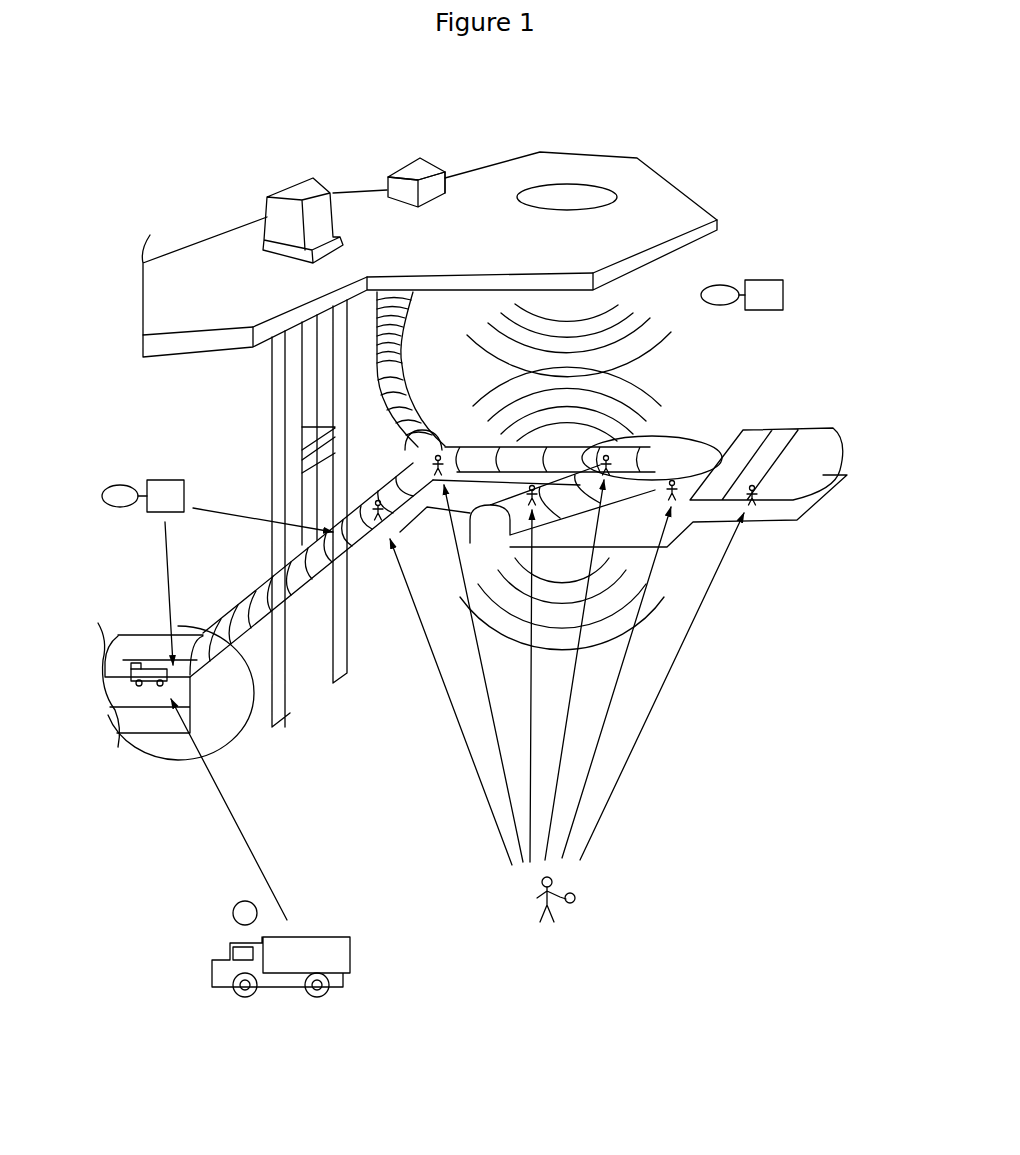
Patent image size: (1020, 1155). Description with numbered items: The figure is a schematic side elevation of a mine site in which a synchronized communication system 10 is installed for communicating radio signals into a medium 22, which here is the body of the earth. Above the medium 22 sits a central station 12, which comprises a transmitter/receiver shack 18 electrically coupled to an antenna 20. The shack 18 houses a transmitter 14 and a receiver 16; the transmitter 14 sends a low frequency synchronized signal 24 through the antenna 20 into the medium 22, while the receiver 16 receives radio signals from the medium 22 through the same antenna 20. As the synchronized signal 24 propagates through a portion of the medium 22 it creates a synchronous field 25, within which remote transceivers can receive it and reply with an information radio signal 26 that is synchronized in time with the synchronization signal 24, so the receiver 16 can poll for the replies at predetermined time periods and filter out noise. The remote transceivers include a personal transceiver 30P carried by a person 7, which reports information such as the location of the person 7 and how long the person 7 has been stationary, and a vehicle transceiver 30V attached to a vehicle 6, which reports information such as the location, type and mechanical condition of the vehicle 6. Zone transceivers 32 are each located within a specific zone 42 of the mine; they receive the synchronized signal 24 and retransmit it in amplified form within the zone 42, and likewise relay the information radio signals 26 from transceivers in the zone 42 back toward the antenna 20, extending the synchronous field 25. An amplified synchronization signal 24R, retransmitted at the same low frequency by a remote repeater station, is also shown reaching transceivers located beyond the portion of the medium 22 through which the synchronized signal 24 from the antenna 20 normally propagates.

The vehicle 6 is at (288, 988).
The person 7 is at (534, 908).
The communication system 10 is at (726, 673).
The central station 12 is at (678, 125).
The transmitter 14 is at (431, 150).
The receiver 16 is at (454, 165).
The transmitter/receiver shack 18 is at (400, 158).
The antenna 20 is at (619, 189).
The medium 22 is at (228, 400).
The synchronized signal 24 is at (642, 314).
The amplified synchronization signal 24R is at (634, 577).
The synchronous field 25 is at (669, 340).
The information radio signal 26 is at (666, 397).
The personal transceiver 30P is at (573, 908).
The vehicle transceiver 30V is at (239, 903).
The zone transceiver 32 is at (190, 485).
The zone 42 is at (692, 436).